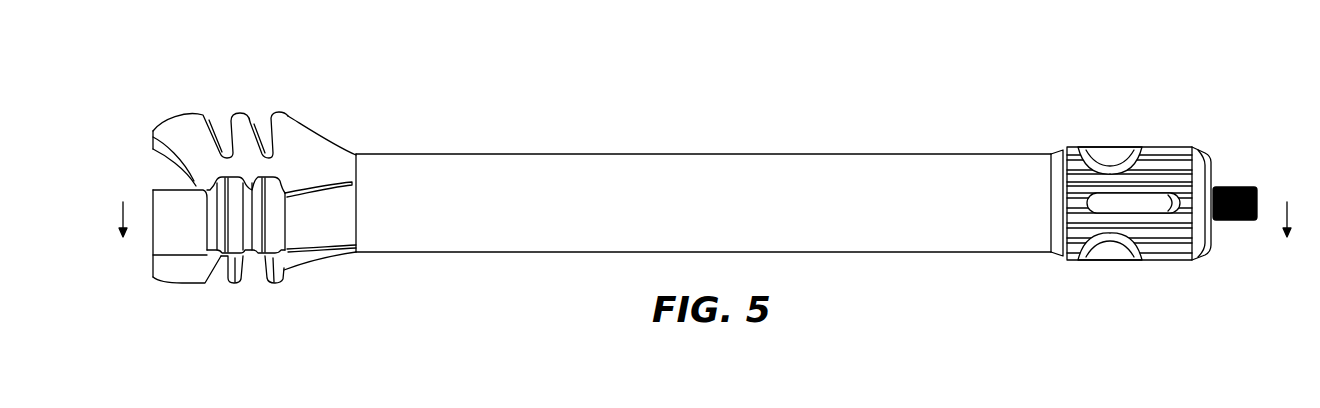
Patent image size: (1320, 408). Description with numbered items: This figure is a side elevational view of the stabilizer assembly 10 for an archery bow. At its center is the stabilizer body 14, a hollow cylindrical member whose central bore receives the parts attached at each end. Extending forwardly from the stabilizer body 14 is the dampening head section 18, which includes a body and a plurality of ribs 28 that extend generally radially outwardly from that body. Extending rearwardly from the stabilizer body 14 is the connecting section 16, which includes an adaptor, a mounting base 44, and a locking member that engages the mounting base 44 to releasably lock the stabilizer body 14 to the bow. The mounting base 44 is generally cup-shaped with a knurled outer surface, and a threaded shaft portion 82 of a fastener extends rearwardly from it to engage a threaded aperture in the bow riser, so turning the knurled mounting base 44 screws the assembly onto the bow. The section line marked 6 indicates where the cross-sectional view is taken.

The stabilizer assembly 10 is at (520, 97).
The stabilizer body 14 is at (713, 153).
The connecting section 16 is at (1157, 147).
The dampening head section 18 is at (303, 123).
The ribs 28 is at (237, 111).
The mounting base 44 is at (1163, 255).
The threaded shaft portion 82 is at (1231, 222).
The section line 6- 6 is at (142, 202).